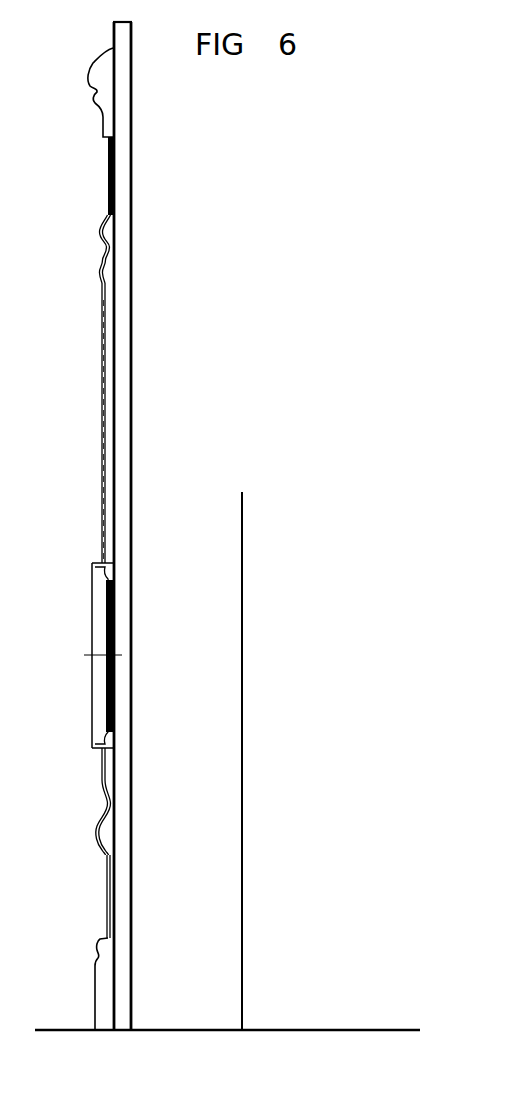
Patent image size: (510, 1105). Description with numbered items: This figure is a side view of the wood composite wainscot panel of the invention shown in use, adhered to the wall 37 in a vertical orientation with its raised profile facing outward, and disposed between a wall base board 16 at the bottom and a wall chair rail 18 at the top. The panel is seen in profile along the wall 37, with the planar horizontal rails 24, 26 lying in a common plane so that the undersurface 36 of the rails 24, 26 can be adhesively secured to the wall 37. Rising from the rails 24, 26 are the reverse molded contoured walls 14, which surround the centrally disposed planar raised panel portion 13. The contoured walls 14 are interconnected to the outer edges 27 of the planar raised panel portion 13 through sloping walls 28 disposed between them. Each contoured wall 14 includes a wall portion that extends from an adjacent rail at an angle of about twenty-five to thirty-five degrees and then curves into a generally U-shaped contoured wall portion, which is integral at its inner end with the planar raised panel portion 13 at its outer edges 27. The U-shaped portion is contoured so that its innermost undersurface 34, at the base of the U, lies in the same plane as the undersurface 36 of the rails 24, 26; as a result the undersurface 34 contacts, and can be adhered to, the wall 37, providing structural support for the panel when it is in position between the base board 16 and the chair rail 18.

The planar raised panel portion 13 is at (105, 473).
The contoured walls 14 is at (100, 237).
The wall base board 16 is at (98, 987).
The wall chair rail 18 is at (93, 87).
The horizontal rail 24 is at (108, 892).
The horizontal rail 26 is at (109, 203).
The outer edges 27 is at (101, 279).
The sloping walls 28 is at (112, 270).
The innermost undersurface 34 is at (112, 259).
The undersurface 36 is at (110, 181).
The wall 37 is at (120, 356).